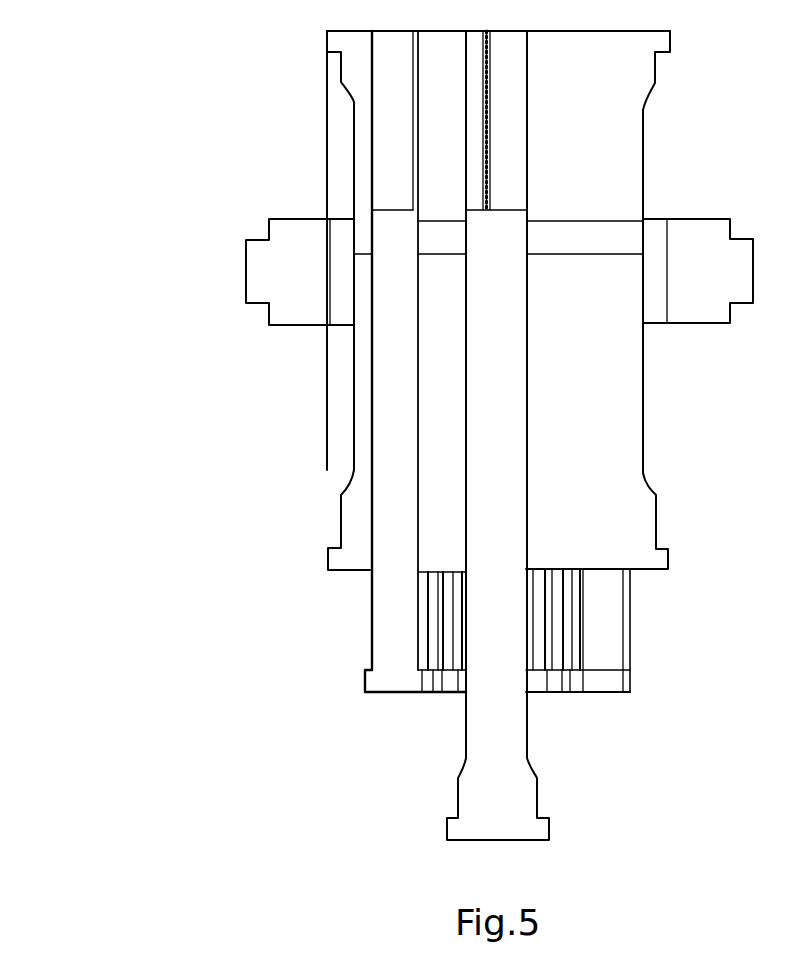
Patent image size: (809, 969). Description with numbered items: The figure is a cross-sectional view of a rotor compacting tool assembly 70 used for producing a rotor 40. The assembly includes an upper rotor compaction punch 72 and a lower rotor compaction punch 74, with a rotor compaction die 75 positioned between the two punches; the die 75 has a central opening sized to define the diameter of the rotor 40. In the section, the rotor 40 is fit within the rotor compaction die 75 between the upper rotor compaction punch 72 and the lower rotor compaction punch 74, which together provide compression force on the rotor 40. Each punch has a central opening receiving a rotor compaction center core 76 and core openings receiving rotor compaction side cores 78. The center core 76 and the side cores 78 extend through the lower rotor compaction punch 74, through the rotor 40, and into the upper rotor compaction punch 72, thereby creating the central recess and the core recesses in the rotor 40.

The rotor compacting tool assembly 70 is at (200, 68).
The upper rotor compaction punch 72 is at (623, 127).
The lower rotor compaction punch 74 is at (622, 384).
The rotor compaction die 75 is at (703, 238).
The rotor compaction center core 76 is at (512, 412).
The rotor compaction side cores 78 is at (385, 399).
The rotor 40 is at (613, 237).